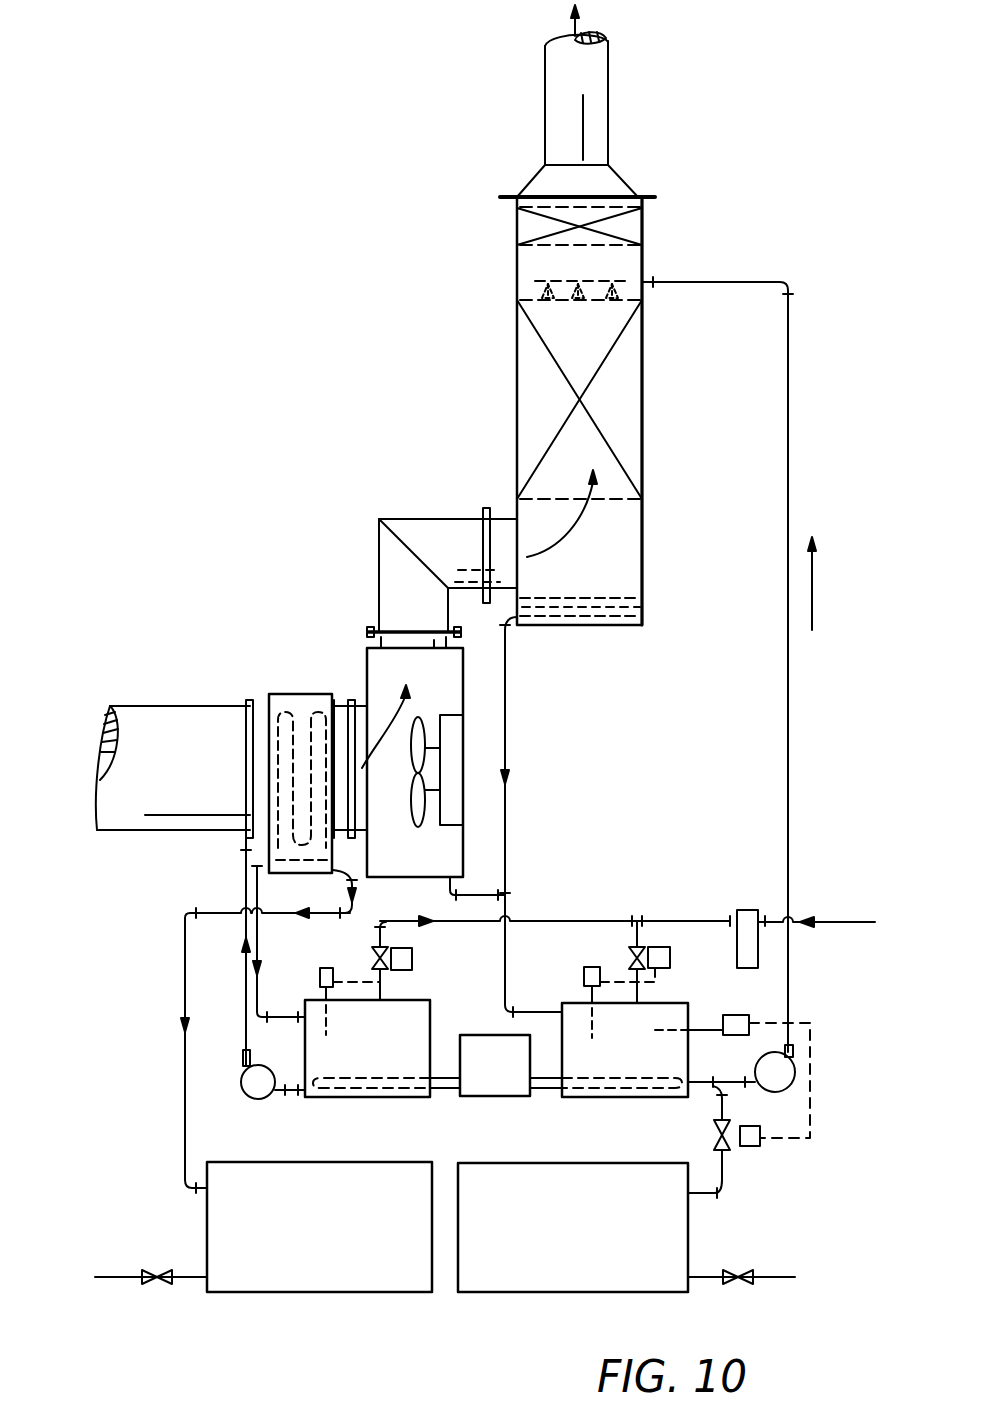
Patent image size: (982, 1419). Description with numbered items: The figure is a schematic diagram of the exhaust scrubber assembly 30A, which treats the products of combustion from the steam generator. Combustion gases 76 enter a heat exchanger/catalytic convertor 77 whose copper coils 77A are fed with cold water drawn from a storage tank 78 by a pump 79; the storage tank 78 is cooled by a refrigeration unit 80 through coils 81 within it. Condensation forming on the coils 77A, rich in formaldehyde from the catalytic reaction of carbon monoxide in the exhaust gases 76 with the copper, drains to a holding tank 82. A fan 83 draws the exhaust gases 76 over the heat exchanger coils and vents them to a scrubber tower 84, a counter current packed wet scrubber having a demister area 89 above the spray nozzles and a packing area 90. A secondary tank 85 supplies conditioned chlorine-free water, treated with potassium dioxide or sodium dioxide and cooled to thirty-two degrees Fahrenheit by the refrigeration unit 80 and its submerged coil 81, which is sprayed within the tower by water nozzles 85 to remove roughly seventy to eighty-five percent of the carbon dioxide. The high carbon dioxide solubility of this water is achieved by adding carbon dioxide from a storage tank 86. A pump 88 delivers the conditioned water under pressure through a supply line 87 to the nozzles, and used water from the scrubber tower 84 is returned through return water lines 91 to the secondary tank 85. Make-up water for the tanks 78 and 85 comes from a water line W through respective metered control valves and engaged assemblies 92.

The exhaust scrubber assembly 30A is at (428, 468).
The combustion gases 76 is at (95, 763).
The heat exchanger/catalytic convertor 77 is at (307, 708).
The coils 77A is at (285, 712).
The storage tank 78 is at (418, 1032).
The pump 79 is at (257, 1087).
The refrigeration unit 80 is at (494, 1083).
The coils 81 is at (406, 1088).
The holding tank 82 is at (340, 1178).
The fan 83 is at (453, 760).
The scrubber tower 84 is at (650, 378).
The secondary tank / water nozzles 85 is at (612, 292).
The storage tank 86 is at (667, 1233).
The supply line 87 is at (788, 503).
The pump 88 is at (780, 1075).
The demister area 89 is at (643, 231).
The packing area 90 is at (628, 455).
The return water lines 91 is at (505, 858).
The metered control valves and engaged assemblies 92 is at (407, 940).
The water line W is at (833, 921).